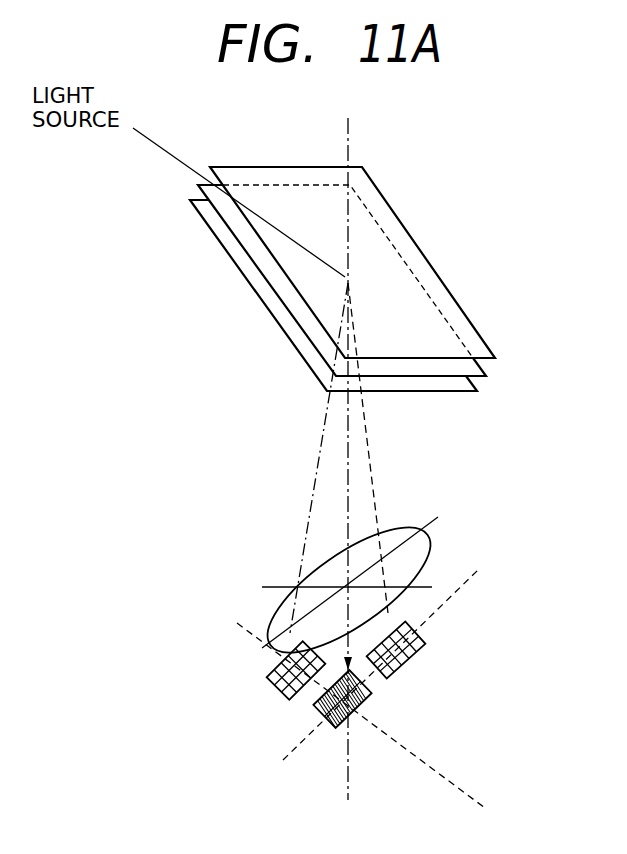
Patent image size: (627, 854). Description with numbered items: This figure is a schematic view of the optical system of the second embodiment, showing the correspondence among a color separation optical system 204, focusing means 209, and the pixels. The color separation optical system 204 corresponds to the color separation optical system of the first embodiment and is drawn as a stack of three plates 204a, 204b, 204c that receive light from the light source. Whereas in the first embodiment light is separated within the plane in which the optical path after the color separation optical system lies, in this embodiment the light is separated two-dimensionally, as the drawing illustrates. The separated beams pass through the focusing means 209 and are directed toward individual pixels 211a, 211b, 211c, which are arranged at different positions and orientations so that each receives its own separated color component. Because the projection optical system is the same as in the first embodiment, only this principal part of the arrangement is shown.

The color separation optical system 204 is at (390, 301).
The first filter plate 204a is at (458, 232).
The second filter plate 204b is at (473, 368).
The third filter plate 204c is at (458, 383).
The focusing means 209 is at (287, 602).
The G image sensor 211a is at (367, 703).
The B image sensor 211b is at (418, 657).
The R image sensor 211c is at (277, 688).